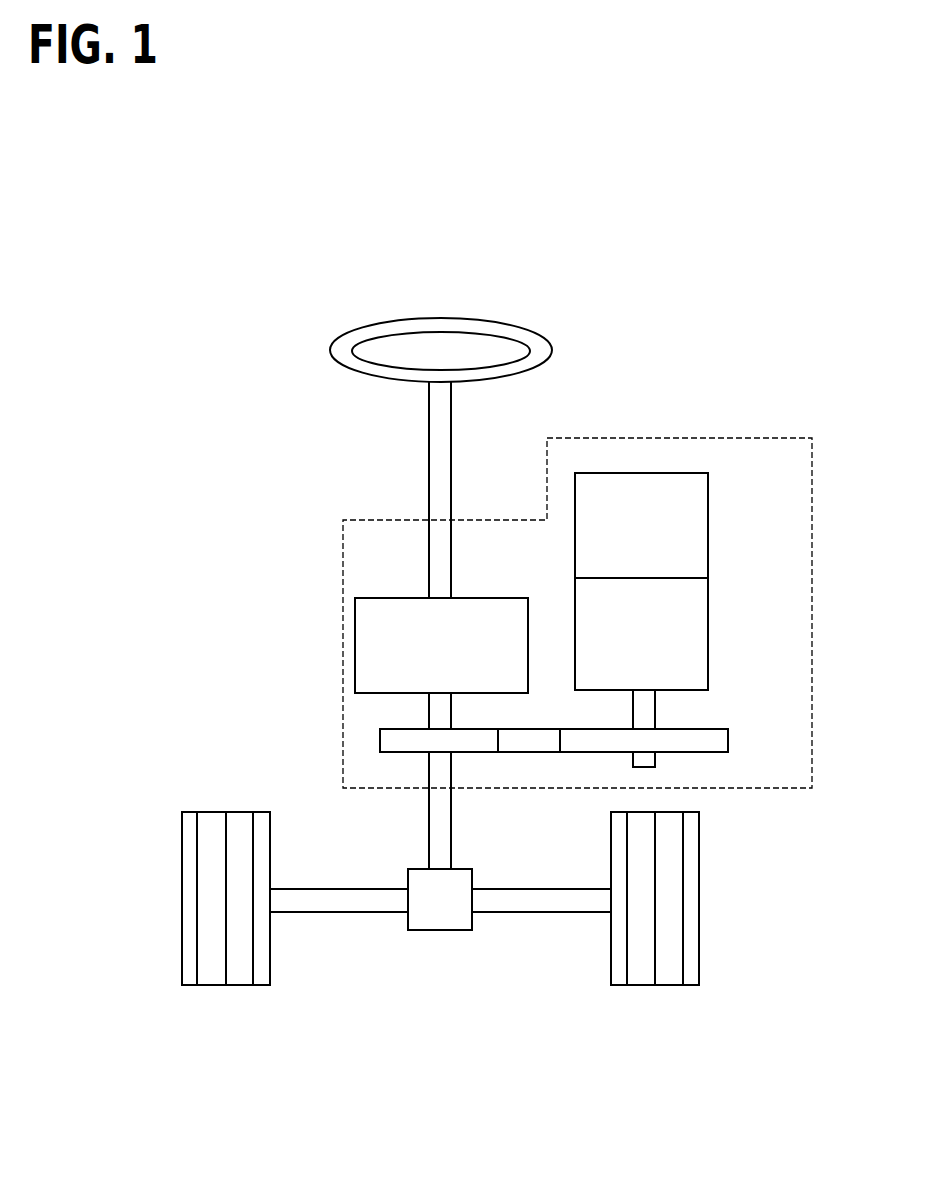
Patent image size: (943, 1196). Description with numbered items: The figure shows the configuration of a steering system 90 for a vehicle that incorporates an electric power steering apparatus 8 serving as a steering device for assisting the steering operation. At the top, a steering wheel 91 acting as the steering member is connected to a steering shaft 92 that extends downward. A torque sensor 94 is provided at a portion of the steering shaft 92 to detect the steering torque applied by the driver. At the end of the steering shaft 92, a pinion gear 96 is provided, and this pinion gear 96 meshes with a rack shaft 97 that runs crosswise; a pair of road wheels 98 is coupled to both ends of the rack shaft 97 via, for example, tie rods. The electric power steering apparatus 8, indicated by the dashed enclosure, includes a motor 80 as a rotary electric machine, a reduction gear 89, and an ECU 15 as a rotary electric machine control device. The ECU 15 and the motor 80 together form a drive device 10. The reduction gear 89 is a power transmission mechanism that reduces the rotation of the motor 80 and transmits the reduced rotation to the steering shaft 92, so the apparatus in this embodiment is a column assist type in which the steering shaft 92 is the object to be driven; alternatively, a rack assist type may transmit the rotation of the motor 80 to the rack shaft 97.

The steering system 90 is at (401, 1063).
The steering wheel 91 is at (328, 352).
The steering shaft 92 is at (429, 440).
The torque sensor 94 is at (383, 598).
The pinion gear 96 is at (430, 930).
The rack shaft 97 is at (333, 912).
The road wheels 98 is at (243, 985).
The electric power steering apparatus 8 is at (757, 438).
The drive device 10 is at (718, 668).
The ECU 15 is at (708, 503).
The motor 80 is at (708, 611).
The reduction gear 89 is at (728, 740).